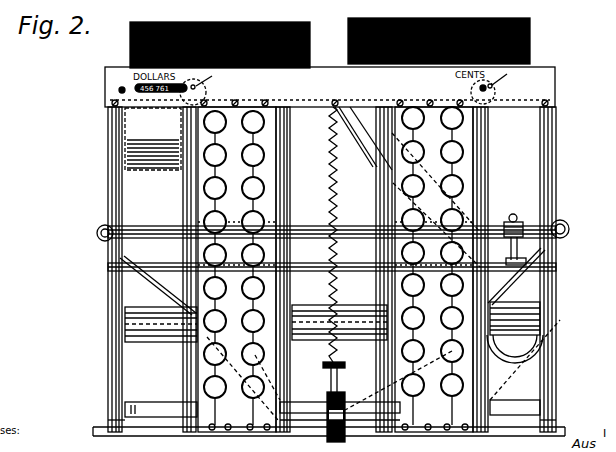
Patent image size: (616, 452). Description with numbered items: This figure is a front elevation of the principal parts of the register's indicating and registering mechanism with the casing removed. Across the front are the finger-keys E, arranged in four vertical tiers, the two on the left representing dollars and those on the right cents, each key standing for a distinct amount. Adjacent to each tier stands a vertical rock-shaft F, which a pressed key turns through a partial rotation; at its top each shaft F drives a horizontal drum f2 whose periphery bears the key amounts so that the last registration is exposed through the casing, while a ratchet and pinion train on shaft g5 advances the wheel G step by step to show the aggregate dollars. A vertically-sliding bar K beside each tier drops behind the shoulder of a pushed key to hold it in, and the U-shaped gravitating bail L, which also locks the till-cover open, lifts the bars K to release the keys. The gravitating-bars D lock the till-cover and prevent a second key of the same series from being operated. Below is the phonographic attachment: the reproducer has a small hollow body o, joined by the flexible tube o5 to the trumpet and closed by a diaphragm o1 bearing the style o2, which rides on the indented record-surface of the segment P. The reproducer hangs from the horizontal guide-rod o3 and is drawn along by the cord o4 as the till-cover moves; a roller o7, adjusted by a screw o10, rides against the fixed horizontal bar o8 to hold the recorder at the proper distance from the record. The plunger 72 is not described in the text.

The horizontal drum f2 is at (150, 28).
The wheel G is at (212, 90).
The shaft g5 is at (357, 74).
The vertical rock-shaft F is at (182, 202).
The vertically-sliding bar K is at (153, 139).
The finger-keys E is at (224, 324).
The spring plunger 72 is at (335, 442).
The horizontal guide-rod o3 is at (166, 240).
The flexible tube o5 is at (570, 228).
The cord o4 is at (140, 292).
The roller o7 is at (509, 240).
The screw o10 is at (519, 259).
The segment P is at (133, 343).
The pointer or style o2 is at (541, 310).
The diaphragm o1 is at (520, 337).
The hollow body o is at (522, 345).
The gravitating-bars D is at (310, 314).
The fixed horizontal bar o8 is at (363, 255).
The U-shaped gravitating bail L is at (332, 408).